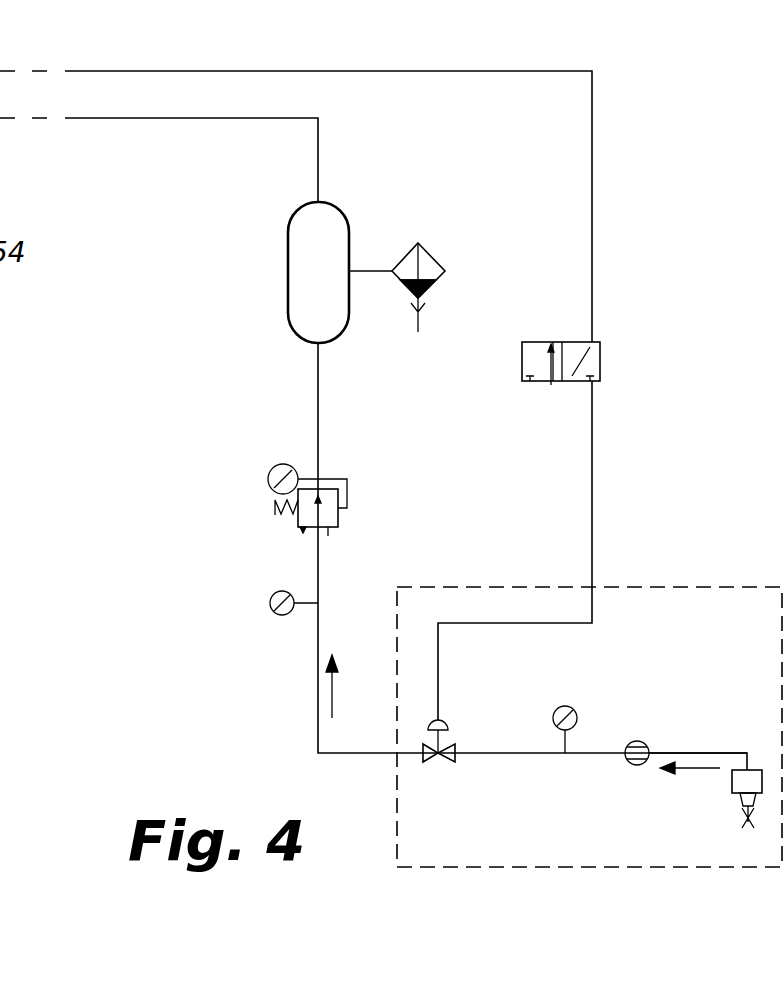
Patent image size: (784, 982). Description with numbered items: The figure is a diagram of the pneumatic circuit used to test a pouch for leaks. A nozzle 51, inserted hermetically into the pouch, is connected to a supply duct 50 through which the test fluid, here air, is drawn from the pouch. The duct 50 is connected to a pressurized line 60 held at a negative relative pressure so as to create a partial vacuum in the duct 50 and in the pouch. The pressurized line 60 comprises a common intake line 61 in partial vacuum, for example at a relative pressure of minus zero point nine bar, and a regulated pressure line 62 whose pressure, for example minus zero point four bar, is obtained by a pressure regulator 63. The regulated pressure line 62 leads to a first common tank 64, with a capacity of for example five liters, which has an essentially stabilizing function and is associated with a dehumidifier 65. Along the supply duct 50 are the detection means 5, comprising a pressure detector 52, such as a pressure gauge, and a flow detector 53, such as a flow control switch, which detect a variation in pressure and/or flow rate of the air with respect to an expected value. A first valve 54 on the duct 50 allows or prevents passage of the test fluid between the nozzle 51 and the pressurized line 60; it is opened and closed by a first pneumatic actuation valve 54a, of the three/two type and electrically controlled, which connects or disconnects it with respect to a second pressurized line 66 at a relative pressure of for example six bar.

The means for detecting a variation in pressure and/or flow rate 5 is at (667, 585).
The duct 50 is at (705, 752).
The nozzle 51 is at (735, 797).
The pressure detector 52 is at (562, 706).
The flow detector 53 is at (630, 766).
The first valve 54 is at (431, 763).
The first pneumatic actuation valve 54a is at (601, 355).
The pressurized line 60 is at (235, 465).
The common intake line 61 is at (185, 119).
The regulated pressure line 62 is at (318, 563).
The pressure regulator 63 is at (340, 518).
The first common tank 64 is at (300, 307).
The dehumidifier 65 is at (432, 268).
The second pressurized line 66 is at (456, 72).